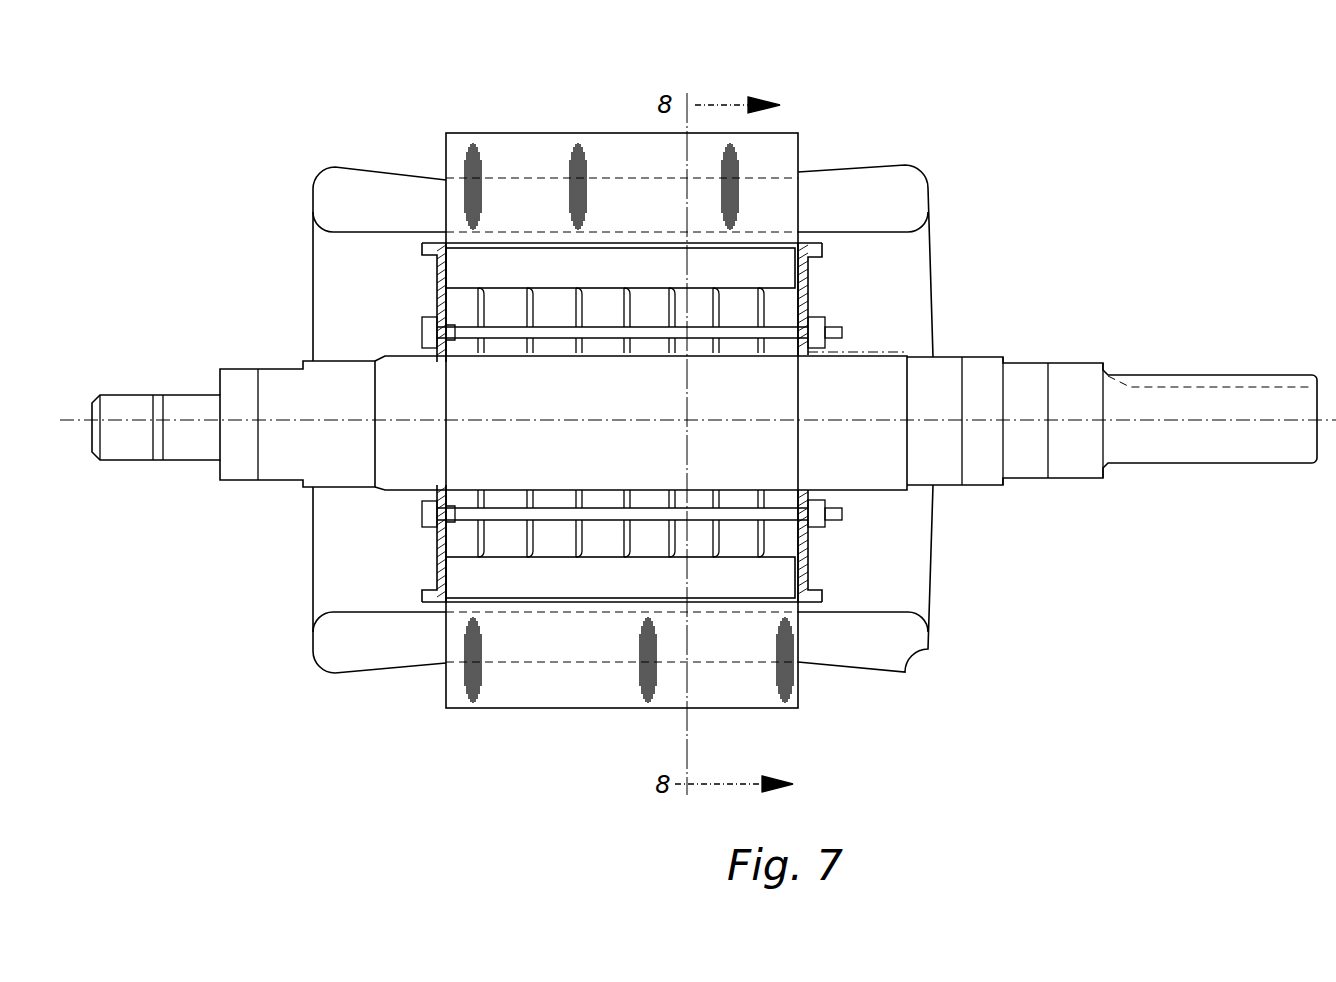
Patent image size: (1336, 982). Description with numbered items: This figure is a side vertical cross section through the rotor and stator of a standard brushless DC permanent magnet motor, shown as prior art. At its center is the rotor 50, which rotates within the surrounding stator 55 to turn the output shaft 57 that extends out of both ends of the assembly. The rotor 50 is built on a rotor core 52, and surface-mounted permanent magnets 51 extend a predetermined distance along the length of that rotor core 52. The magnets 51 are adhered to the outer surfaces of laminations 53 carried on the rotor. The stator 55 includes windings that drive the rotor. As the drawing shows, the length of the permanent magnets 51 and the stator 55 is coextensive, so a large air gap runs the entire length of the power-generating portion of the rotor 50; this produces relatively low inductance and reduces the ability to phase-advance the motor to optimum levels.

The rotor 50 is at (352, 360).
The permanent magnets 51 is at (647, 262).
The rotor core 52 is at (413, 457).
The laminations 53 is at (775, 318).
The stator 55 is at (372, 190).
The output shaft 57 is at (187, 393).